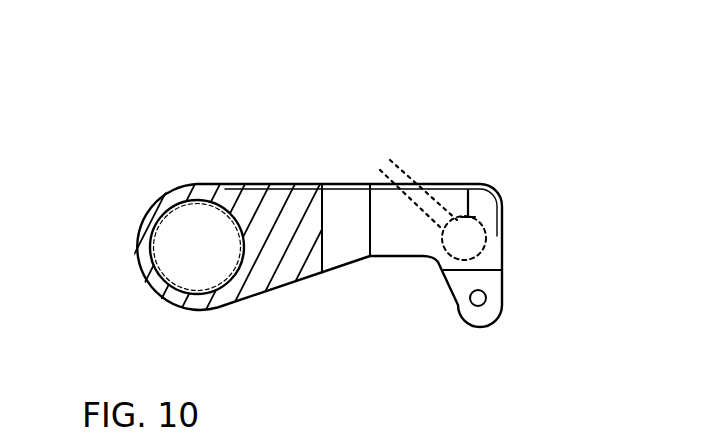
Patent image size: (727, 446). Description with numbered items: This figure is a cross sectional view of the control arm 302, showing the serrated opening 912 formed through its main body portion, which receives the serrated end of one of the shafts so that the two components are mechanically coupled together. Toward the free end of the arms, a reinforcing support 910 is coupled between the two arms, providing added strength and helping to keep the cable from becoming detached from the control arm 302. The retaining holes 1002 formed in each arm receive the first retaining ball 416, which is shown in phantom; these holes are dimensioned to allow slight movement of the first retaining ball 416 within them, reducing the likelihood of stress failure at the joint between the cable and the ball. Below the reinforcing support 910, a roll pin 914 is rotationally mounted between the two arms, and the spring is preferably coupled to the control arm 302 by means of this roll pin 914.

The control arm 302 is at (442, 100).
The opening 912 is at (185, 213).
The reinforcing support 910 is at (493, 243).
The retaining holes 1002 is at (474, 235).
The first retaining ball 416 is at (477, 184).
The roll pin 914 is at (486, 299).